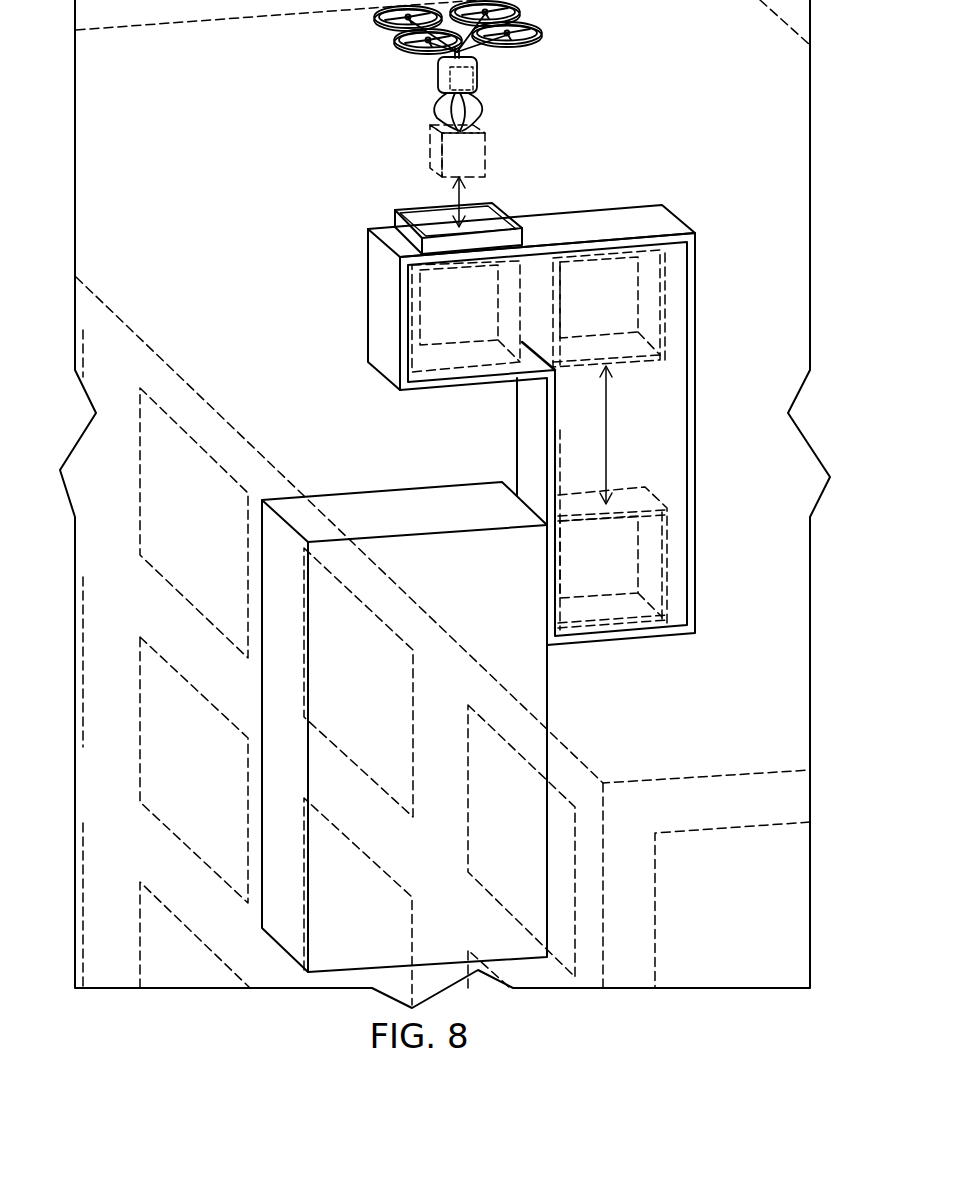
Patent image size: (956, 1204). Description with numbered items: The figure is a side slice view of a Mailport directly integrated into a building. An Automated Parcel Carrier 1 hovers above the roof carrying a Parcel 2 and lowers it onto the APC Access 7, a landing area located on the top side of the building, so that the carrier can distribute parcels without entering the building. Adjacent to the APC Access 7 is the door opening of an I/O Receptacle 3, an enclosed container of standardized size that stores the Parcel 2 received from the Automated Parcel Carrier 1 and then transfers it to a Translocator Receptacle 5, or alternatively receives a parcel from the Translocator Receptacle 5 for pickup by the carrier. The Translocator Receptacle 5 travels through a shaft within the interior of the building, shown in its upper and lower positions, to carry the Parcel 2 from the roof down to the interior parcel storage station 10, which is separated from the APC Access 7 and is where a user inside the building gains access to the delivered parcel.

The Automated Parcel Carrier 1 is at (397, 42).
The Parcel 2 is at (457, 151).
The I/O Receptacle 3 is at (466, 316).
The Translocator Receptacle 5 is at (610, 440).
The APC Access 7 is at (440, 222).
The interior parcel storage station 10 is at (404, 727).